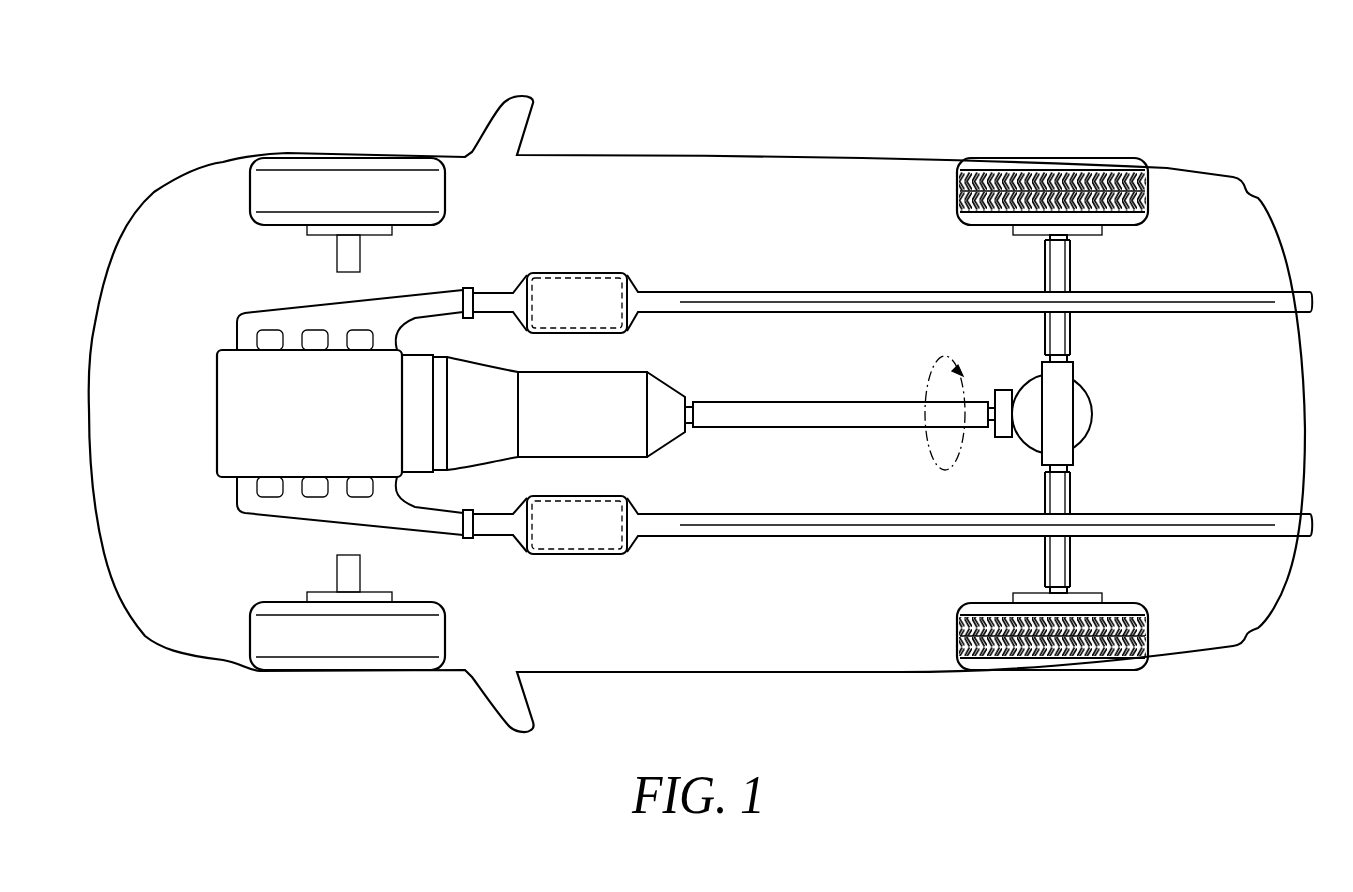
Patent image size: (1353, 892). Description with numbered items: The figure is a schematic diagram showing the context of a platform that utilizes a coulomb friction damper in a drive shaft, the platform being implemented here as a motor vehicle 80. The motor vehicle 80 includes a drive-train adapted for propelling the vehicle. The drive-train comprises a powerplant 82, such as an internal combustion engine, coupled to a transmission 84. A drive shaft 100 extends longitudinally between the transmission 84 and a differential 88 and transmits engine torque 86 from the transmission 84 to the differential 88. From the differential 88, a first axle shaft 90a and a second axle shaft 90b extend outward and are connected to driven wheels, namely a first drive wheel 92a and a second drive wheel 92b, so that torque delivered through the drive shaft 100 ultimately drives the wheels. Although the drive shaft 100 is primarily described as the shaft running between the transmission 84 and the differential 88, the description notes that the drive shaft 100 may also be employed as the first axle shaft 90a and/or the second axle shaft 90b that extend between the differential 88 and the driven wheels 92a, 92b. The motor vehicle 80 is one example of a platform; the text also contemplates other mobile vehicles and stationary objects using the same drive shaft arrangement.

The motor vehicle 80 is at (687, 155).
The powerplant 82 is at (215, 405).
The transmission 84 is at (536, 466).
The engine torque 86 is at (915, 377).
The differential 88 is at (1097, 400).
The first axle shaft 90a is at (1072, 277).
The second axle shaft 90b is at (1072, 497).
The first drive wheel 92a is at (1060, 170).
The second drive wheel 92b is at (1060, 657).
The drive shaft 100 is at (844, 412).